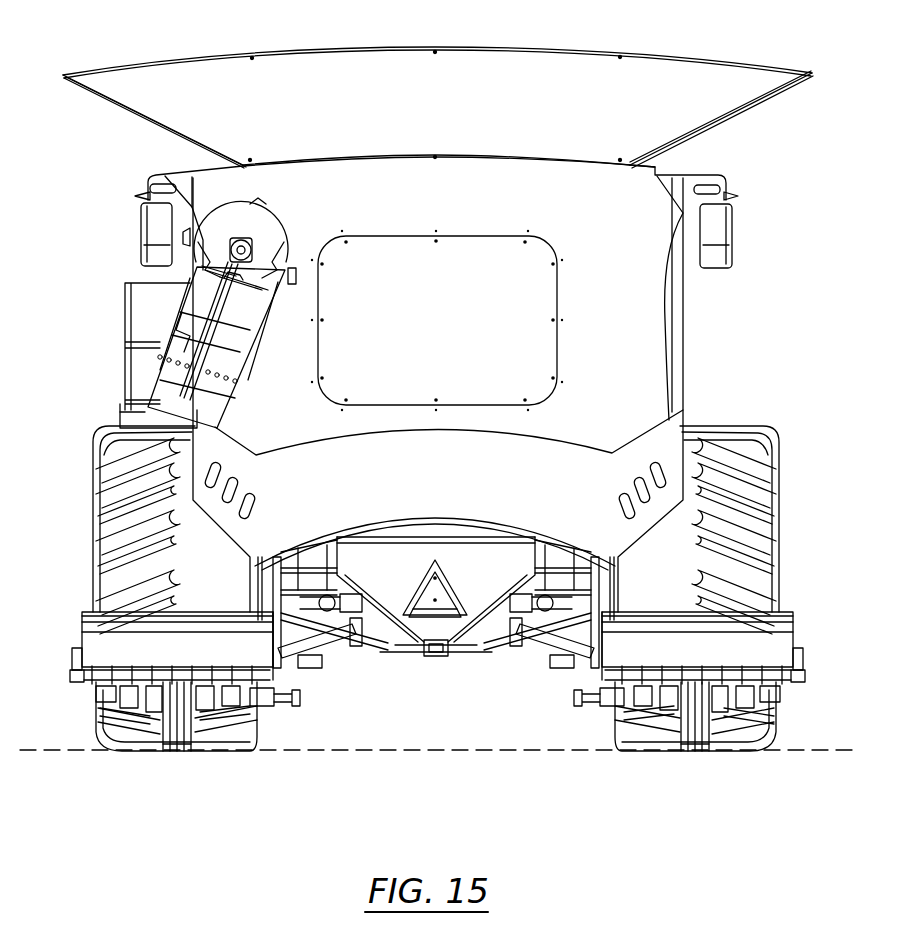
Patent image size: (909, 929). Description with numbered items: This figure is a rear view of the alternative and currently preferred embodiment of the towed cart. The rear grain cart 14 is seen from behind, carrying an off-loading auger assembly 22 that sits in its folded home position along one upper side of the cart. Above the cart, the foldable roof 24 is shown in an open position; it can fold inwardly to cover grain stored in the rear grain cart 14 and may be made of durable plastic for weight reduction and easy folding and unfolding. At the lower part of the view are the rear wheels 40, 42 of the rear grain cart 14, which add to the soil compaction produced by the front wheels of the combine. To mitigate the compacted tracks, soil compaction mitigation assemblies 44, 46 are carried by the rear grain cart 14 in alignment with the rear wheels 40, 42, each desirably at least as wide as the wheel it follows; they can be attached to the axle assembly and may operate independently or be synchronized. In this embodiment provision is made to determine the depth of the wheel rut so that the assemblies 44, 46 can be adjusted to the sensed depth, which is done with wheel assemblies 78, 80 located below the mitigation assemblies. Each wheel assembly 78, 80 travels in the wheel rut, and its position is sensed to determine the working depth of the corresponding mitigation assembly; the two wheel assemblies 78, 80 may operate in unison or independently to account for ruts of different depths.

The rear grain cart 14 is at (116, 44).
The foldable roof 24 is at (735, 120).
The off-loading auger assembly 22 is at (185, 325).
The rear wheel 42 is at (118, 531).
The rear wheel 40 is at (755, 490).
The soil compaction mitigation assembly 44 is at (80, 603).
The soil compaction mitigation assembly 46 is at (794, 603).
The wheel assembly 80 is at (181, 768).
The wheel assembly 78 is at (698, 760).